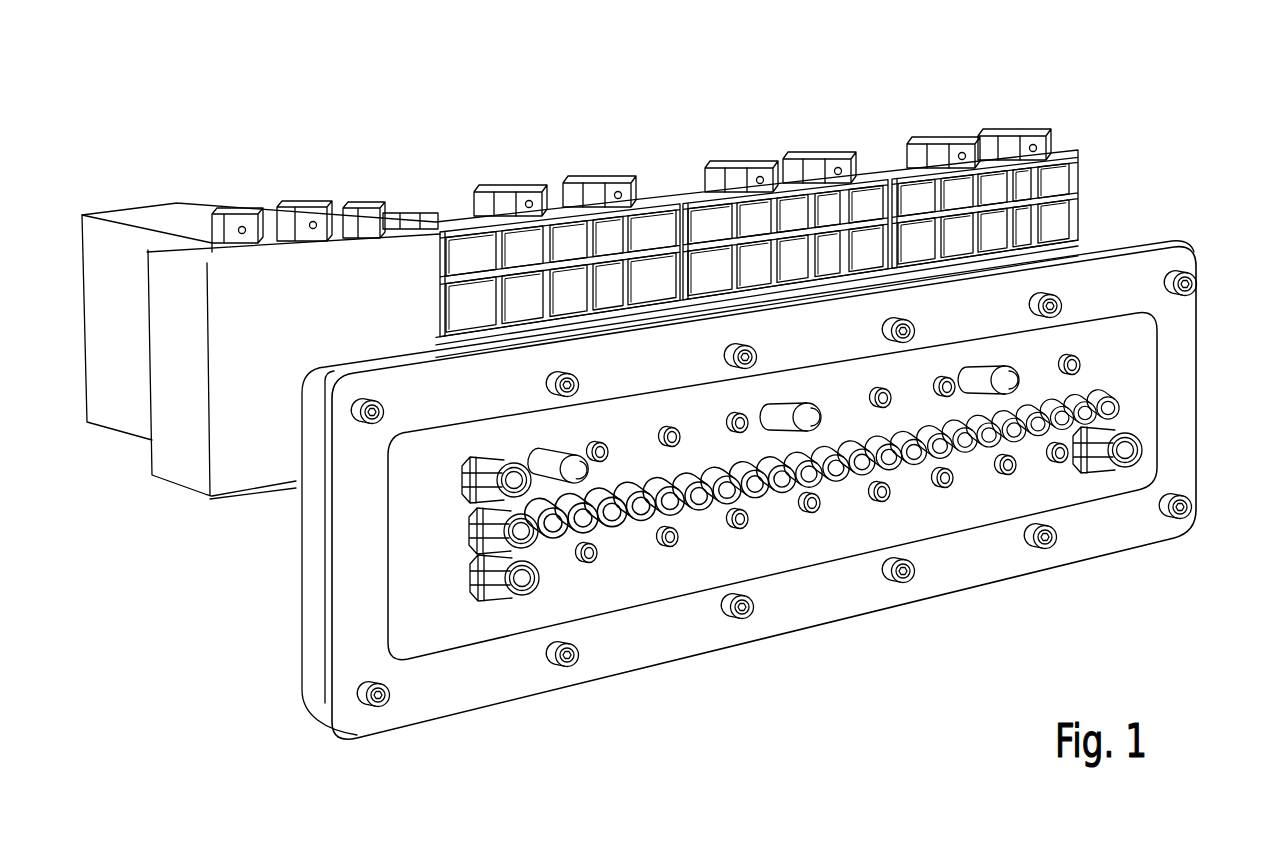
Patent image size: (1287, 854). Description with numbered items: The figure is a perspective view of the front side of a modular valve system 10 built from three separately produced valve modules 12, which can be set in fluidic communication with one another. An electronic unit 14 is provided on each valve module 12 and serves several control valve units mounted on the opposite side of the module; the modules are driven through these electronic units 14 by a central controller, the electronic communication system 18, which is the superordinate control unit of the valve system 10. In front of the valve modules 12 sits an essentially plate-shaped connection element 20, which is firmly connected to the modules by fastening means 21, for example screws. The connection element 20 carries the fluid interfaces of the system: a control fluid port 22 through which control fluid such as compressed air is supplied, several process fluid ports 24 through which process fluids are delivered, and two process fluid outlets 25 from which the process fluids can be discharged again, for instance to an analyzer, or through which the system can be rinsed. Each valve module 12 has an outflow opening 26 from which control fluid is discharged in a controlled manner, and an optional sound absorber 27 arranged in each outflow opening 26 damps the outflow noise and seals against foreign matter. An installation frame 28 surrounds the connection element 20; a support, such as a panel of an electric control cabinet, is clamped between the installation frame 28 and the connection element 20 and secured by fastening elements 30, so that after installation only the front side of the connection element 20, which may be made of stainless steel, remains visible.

The valve system 10 is at (629, 256).
The valve module 12 is at (803, 175).
The electronic unit 14 is at (1055, 183).
The electronic communication system 18 is at (178, 213).
The connection element 20 is at (418, 617).
The fastening means 21 is at (733, 523).
The control fluid port 22 is at (475, 463).
The process fluid ports 24 is at (523, 533).
The process fluid outlets 25 is at (523, 596).
The outflow opening 26 is at (825, 382).
The sound absorber 27 is at (780, 418).
The installation frame 28 is at (1127, 530).
The fastening elements 30 is at (1050, 549).